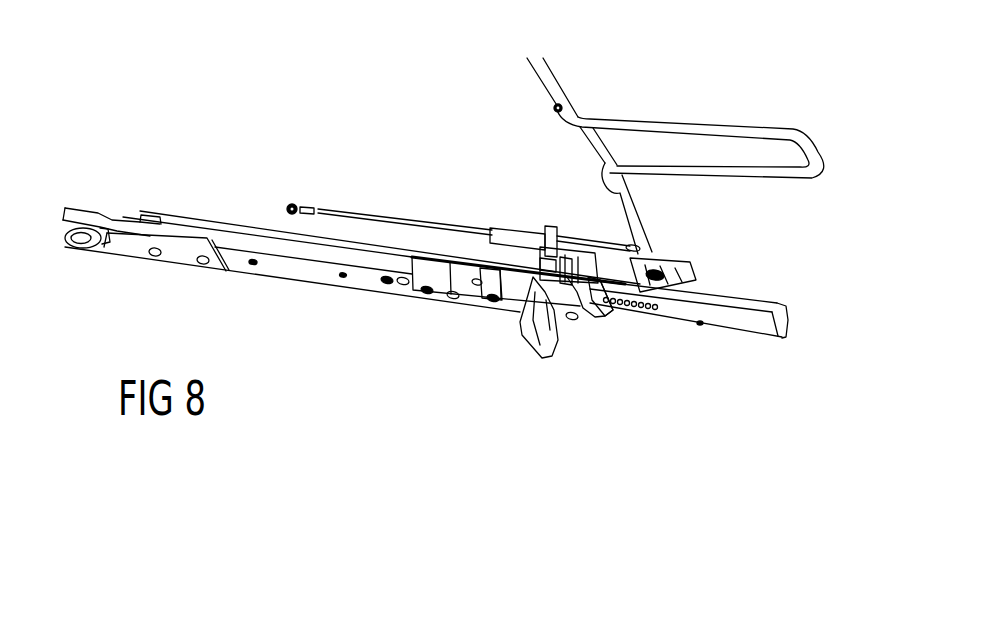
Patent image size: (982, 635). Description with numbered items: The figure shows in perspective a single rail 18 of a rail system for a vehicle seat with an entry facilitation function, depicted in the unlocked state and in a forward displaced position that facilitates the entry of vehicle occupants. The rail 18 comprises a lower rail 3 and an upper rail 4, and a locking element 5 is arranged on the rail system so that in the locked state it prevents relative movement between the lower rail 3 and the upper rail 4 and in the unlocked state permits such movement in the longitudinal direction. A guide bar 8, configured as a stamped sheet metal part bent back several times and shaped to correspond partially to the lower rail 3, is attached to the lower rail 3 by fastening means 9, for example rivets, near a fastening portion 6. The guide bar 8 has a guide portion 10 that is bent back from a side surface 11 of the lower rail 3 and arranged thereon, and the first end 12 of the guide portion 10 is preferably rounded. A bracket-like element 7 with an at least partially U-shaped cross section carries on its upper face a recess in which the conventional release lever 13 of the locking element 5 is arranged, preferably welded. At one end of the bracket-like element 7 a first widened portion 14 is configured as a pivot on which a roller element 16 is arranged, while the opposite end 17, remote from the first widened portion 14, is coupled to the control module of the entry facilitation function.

The rail 18 is at (252, 112).
The release lever 13 is at (712, 128).
The guide bar 8 is at (545, 258).
The first widened portion 14 is at (525, 240).
The bracket-like element 7 is at (588, 262).
The end 17 is at (680, 258).
The upper rail 4 is at (767, 306).
The fastening portion 6 is at (133, 250).
The side surface 11 is at (313, 253).
The fastening means 9 is at (428, 295).
The first end 12 is at (438, 294).
The guide portion 10 is at (490, 300).
The roller element 16 is at (550, 325).
The lower rail 3 is at (598, 320).
The locking element 5 is at (642, 315).